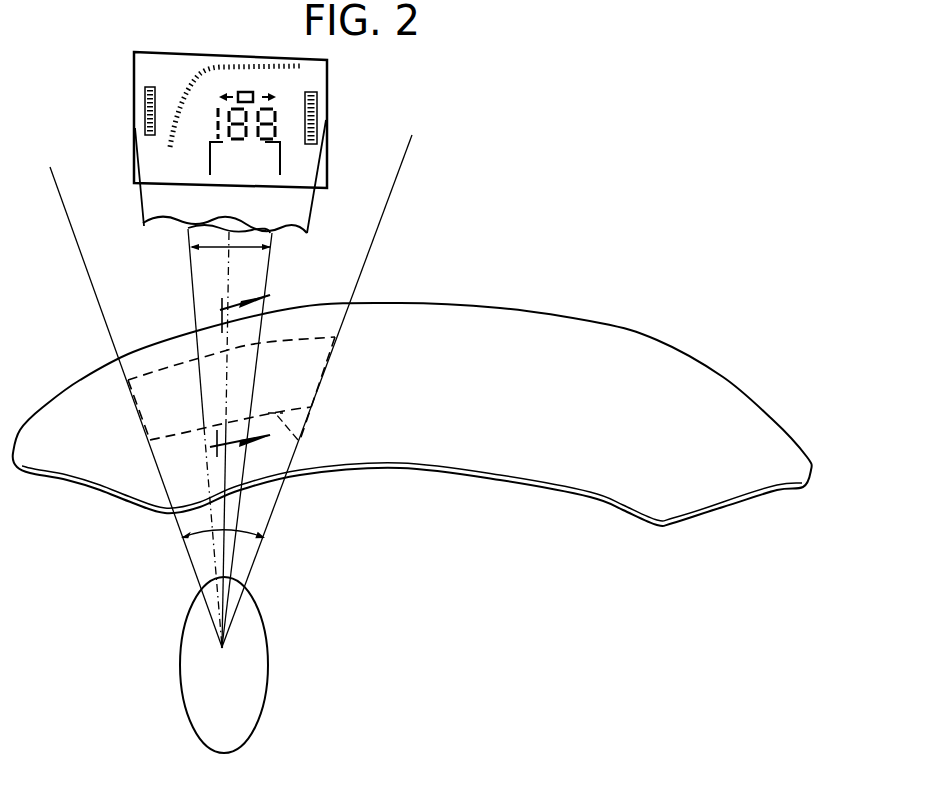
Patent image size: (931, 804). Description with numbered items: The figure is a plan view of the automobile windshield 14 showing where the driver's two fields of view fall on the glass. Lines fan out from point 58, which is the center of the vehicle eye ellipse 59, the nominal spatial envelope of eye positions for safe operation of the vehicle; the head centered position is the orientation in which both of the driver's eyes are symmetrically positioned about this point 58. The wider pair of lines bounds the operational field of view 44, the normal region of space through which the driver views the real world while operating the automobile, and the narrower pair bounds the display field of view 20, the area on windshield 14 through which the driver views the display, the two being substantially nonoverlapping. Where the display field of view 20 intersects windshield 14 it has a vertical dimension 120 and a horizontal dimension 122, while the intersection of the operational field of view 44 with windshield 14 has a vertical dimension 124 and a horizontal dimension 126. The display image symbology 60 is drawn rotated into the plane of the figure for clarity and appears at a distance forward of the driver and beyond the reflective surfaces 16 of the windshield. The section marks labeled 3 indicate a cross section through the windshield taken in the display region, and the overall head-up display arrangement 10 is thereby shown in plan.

The head-up display system 10 is at (231, 323).
The windshield 14 is at (47, 468).
The reflective surfaces 16 is at (200, 357).
The display field of view 20 is at (244, 256).
The operational field of view 44 is at (240, 527).
The point 58 is at (223, 647).
The vehicle eye ellipse 59 is at (270, 667).
The display image symbology 60 is at (333, 82).
The vertical dimension 120 is at (258, 340).
The horizontal dimension 122 is at (268, 306).
The vertical dimension 124 is at (330, 358).
The horizontal dimension 126 is at (299, 439).
The section line 3- 3 is at (234, 378).